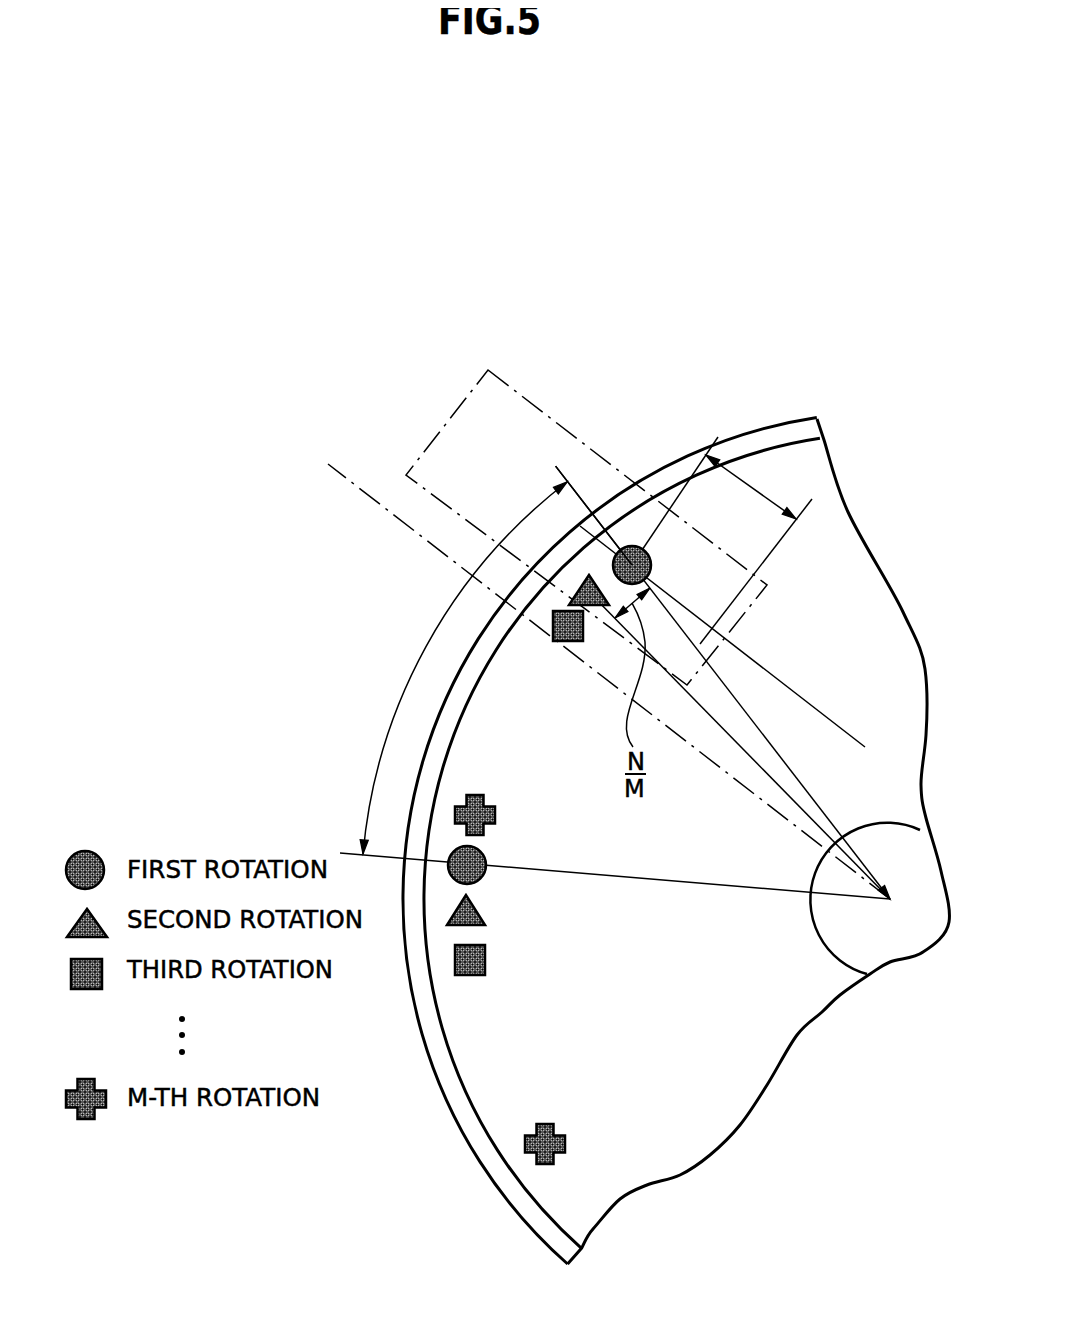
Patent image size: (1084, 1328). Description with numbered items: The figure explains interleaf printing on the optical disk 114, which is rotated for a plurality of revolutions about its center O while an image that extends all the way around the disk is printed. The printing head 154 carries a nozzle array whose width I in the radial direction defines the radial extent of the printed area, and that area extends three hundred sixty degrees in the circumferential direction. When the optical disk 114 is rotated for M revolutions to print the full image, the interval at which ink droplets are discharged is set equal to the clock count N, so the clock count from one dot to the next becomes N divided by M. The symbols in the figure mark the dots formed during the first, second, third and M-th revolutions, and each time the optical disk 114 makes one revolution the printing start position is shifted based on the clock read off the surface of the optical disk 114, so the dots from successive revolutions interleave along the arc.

The optical disk 114 is at (478, 1162).
The printing head 154 is at (542, 408).
The rotation center O is at (624, 719).
The clock count N is at (463, 668).
The width of the nozzle array I is at (751, 487).